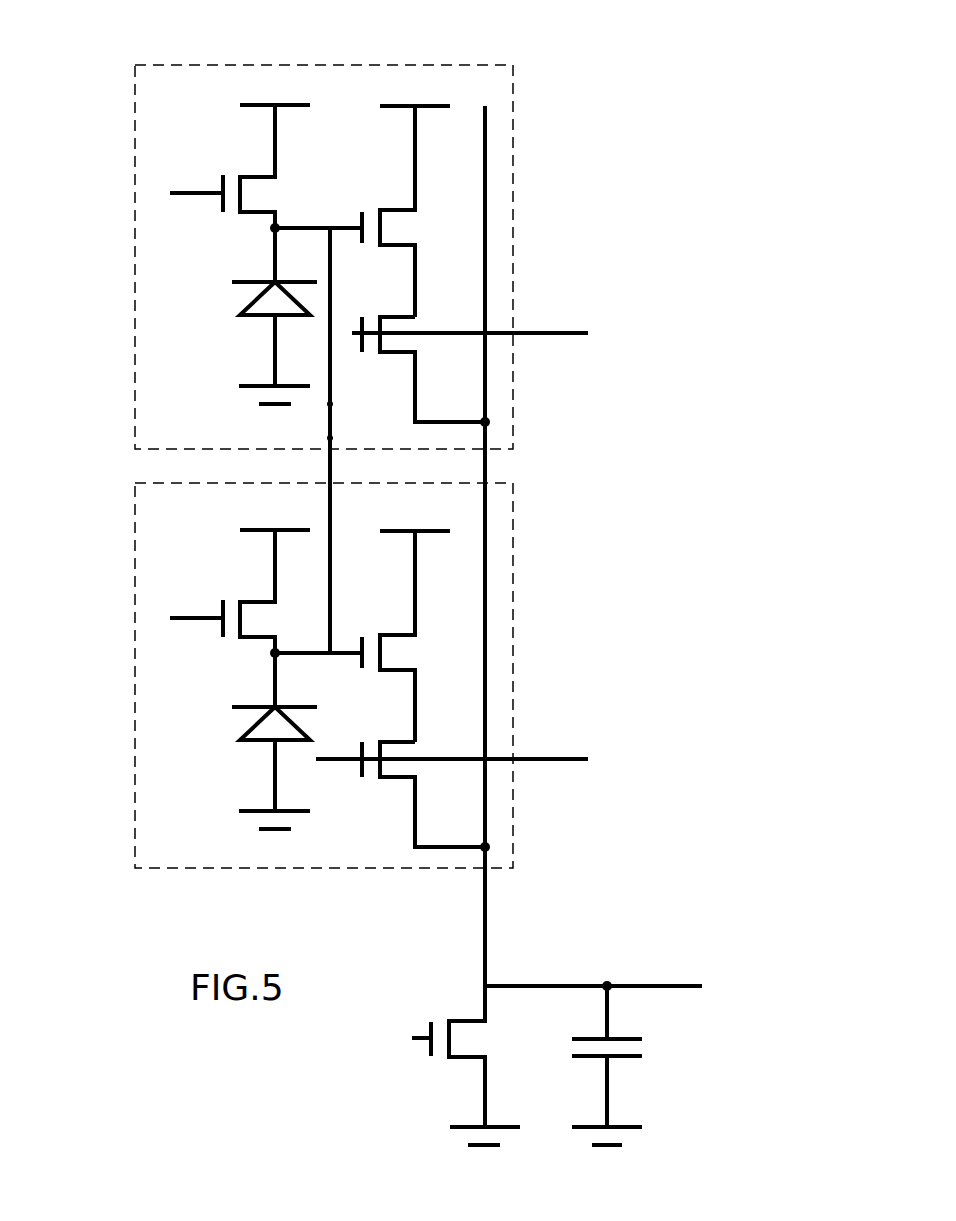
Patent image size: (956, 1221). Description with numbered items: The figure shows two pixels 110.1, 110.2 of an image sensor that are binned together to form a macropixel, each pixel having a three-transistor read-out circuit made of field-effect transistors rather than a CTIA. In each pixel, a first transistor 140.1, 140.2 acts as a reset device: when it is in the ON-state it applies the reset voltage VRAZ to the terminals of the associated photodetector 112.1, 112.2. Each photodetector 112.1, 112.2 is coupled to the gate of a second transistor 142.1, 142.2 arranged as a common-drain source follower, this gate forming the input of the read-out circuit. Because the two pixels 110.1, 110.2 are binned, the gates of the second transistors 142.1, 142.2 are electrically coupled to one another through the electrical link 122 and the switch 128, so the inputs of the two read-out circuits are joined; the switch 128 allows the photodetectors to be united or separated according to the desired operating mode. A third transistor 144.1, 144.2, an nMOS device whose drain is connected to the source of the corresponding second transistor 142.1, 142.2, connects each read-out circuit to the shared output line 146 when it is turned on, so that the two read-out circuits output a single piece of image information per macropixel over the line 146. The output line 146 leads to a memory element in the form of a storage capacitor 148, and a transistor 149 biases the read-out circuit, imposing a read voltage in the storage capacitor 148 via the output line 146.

The first pixel 110.1 is at (513, 88).
The second pixel 110.2 is at (513, 507).
The first transistor 140.1 is at (250, 214).
The first transistor 140.2 is at (250, 639).
The photodetector 112.1 is at (268, 298).
The photodetector 112.2 is at (268, 723).
The second transistor 142.1 is at (397, 210).
The second transistor 142.2 is at (397, 635).
The third transistor 144.1 is at (396, 353).
The third transistor 144.2 is at (396, 778).
The switch 128 is at (329, 423).
The electrical link 122 is at (329, 477).
The output line 146 is at (485, 648).
The transistor 149 is at (460, 1060).
The storage capacitor 148 is at (585, 1058).